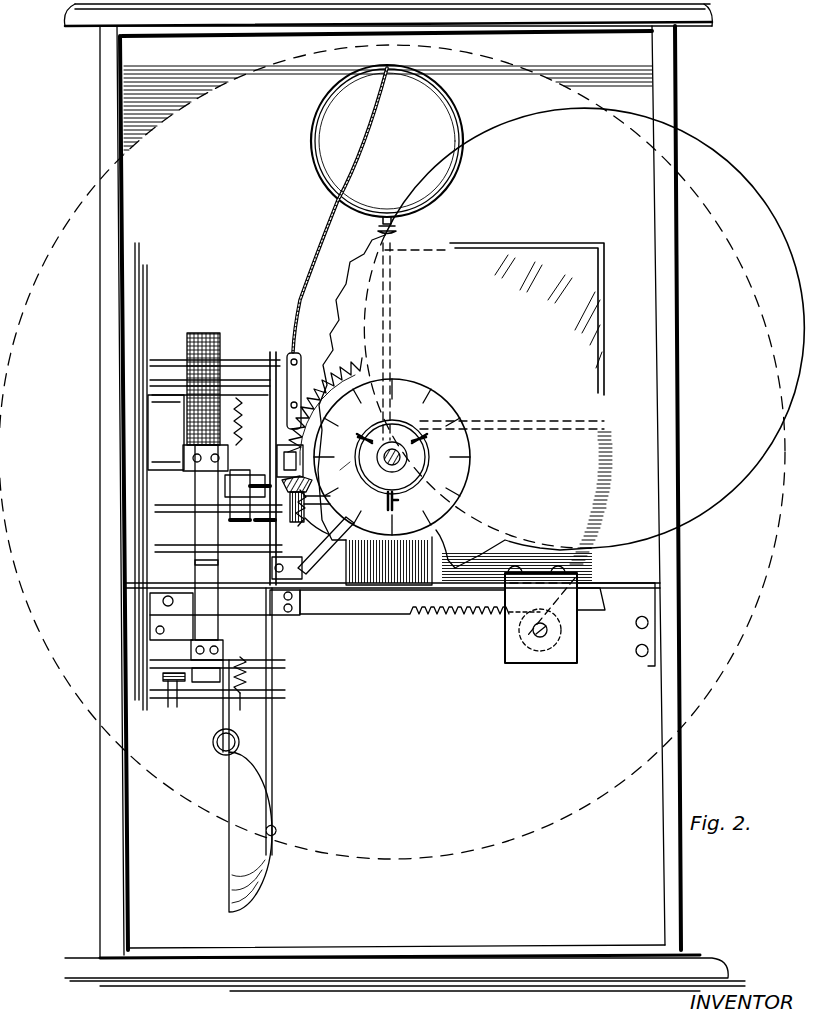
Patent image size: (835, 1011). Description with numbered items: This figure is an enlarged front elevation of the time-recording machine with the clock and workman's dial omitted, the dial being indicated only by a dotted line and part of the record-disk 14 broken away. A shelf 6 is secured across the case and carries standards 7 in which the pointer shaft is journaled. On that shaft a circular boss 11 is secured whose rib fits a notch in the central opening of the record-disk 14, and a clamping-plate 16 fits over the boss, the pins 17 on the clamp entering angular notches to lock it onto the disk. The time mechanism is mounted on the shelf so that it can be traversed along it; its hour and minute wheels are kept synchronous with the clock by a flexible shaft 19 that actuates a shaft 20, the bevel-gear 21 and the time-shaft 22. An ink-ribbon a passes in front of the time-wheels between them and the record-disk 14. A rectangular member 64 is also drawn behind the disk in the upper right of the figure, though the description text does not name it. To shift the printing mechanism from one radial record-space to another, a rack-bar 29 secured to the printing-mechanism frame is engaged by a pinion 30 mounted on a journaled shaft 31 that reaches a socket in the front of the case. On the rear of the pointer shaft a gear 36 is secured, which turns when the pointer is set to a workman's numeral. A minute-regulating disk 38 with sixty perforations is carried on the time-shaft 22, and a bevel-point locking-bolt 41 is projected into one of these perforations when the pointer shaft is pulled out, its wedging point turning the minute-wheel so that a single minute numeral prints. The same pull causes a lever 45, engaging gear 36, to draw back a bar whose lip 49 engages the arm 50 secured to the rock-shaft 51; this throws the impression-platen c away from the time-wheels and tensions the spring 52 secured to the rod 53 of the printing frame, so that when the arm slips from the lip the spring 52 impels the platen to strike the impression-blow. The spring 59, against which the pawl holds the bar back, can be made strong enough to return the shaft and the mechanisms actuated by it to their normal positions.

The ink-ribbon a is at (200, 333).
The impression-platen c is at (180, 462).
The shelf 6 is at (452, 583).
The standards 7 is at (389, 561).
The circular boss 11 is at (432, 462).
The record-disk 14 is at (561, 336).
The clamping-plate 16 is at (392, 457).
The pins 17 is at (435, 432).
The flexible shaft 19 is at (334, 252).
The shaft 20 is at (300, 356).
The bevel-gear 21 is at (336, 470).
The shaft 22 is at (306, 517).
The rack-bar 29 is at (392, 613).
The pinion 30 is at (504, 648).
The shaft 31 is at (540, 640).
The gear 36 is at (332, 380).
The minute-regulating disk 38 is at (249, 459).
The bevel-point locking-bolt 41 is at (246, 470).
The lever 45 is at (322, 560).
The lip 49 is at (210, 682).
The arm 50 is at (205, 505).
The rock-shaft 51 is at (171, 616).
The spring 52 is at (231, 736).
The rod 53 is at (170, 679).
The spring 59 is at (247, 676).
The mirror frame 64 is at (494, 305).